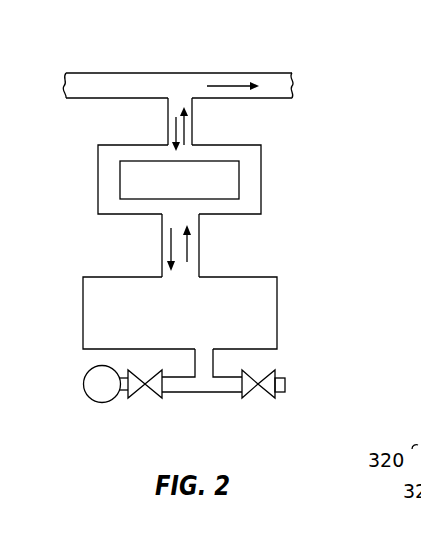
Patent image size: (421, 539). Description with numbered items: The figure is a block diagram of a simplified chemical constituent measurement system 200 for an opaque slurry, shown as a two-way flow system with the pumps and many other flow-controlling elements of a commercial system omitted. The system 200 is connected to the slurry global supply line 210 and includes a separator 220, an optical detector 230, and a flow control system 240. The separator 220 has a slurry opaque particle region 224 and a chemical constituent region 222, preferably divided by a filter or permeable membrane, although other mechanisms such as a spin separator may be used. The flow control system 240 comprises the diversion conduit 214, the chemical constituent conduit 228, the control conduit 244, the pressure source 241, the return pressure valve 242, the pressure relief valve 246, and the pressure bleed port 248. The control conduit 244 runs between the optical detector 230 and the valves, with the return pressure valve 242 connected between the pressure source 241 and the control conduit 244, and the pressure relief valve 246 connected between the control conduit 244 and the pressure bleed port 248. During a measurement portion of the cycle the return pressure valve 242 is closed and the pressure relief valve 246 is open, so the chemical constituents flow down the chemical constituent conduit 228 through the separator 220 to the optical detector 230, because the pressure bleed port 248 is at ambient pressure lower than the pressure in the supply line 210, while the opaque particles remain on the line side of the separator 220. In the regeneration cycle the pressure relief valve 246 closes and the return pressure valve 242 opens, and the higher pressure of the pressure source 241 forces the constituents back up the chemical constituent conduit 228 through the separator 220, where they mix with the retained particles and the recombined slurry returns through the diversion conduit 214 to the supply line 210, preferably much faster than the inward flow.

The chemical constituent measurement system 200 is at (338, 122).
The slurry global supply line 210 is at (263, 73).
The diversion conduit 214 is at (193, 122).
The separator 220 is at (300, 159).
The chemical constituent region 222 is at (261, 196).
The slurry opaque particle region 224 is at (221, 199).
The chemical constituent conduit 228 is at (162, 239).
The optical detector 230 is at (277, 303).
The flow control system 240 is at (61, 416).
The pressure source 241 is at (89, 371).
The return pressure valve 242 is at (152, 398).
The control conduit 244 is at (196, 393).
The pressure relief valve 246 is at (268, 398).
The pressure bleed port 248 is at (281, 378).